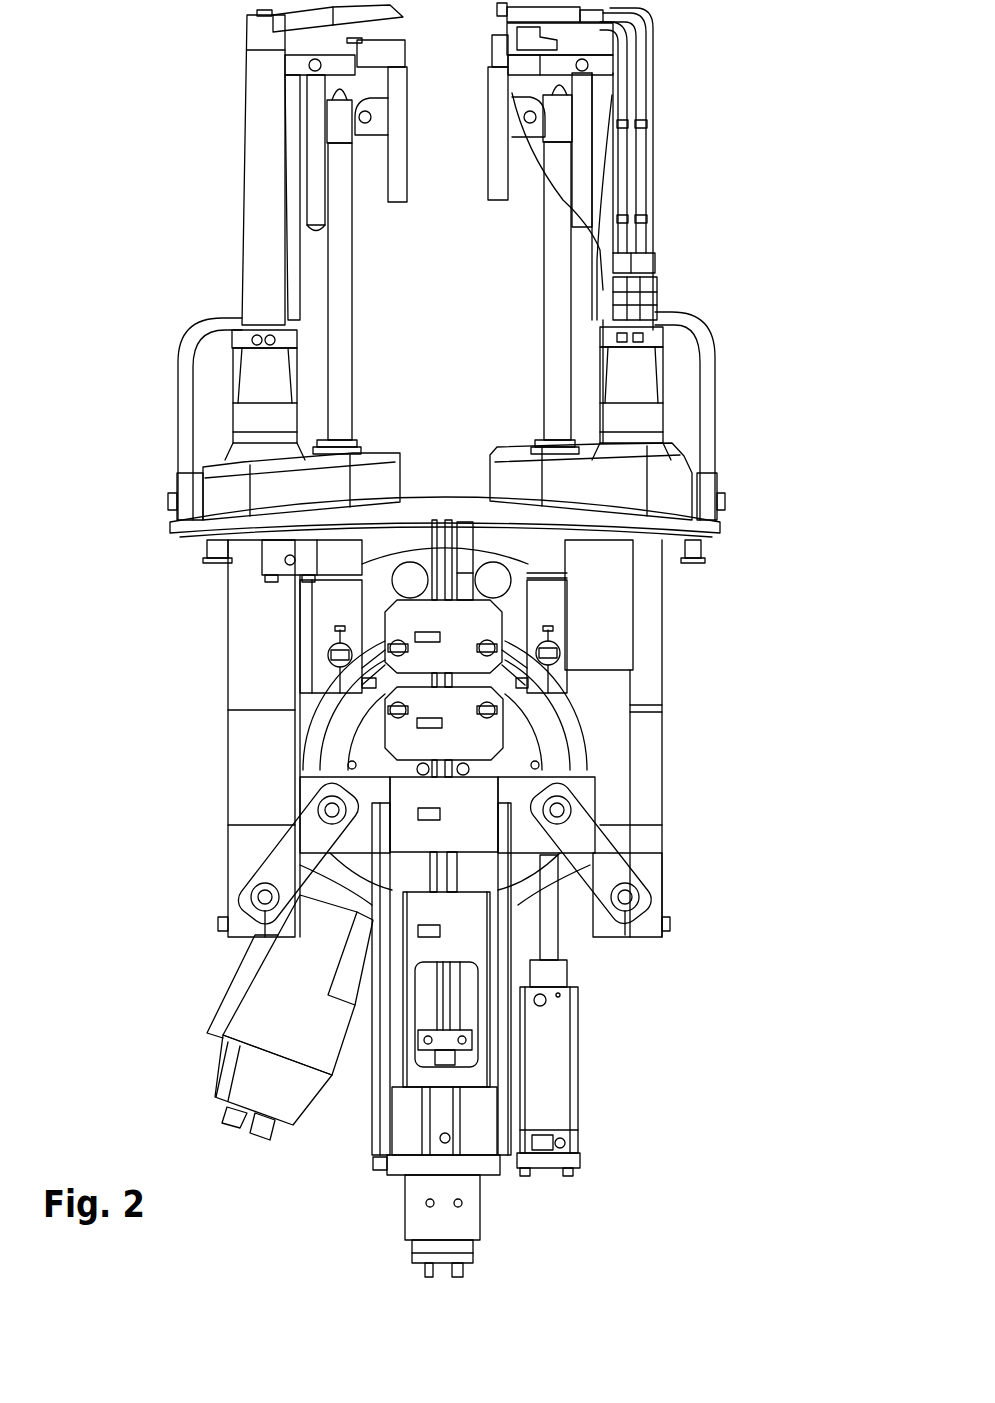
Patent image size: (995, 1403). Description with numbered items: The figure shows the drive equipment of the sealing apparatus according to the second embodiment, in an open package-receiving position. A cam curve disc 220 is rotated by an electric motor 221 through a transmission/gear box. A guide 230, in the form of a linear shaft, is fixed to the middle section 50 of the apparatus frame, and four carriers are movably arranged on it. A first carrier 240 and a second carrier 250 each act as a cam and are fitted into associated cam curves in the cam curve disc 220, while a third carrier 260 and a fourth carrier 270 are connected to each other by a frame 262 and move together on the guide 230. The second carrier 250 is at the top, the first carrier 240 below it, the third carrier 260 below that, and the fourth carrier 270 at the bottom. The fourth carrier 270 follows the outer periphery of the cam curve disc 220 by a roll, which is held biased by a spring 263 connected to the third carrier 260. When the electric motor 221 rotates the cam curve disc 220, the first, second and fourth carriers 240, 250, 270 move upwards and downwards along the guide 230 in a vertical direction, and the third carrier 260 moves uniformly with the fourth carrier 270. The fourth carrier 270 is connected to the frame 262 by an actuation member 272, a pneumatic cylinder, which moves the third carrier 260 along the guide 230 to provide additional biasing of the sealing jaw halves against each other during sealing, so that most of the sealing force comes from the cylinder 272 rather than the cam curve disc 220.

The middle section 50 is at (715, 513).
The cam curve disc 220 is at (312, 738).
The electric motor 221 is at (298, 998).
The guide 230 is at (463, 813).
The first carrier 240 is at (520, 747).
The second carrier 250 is at (505, 605).
The third carrier 260 is at (500, 857).
The frame 262 is at (378, 1105).
The spring 263 is at (577, 1112).
The fourth carrier 270 is at (453, 933).
The actuation member 272 is at (477, 1122).